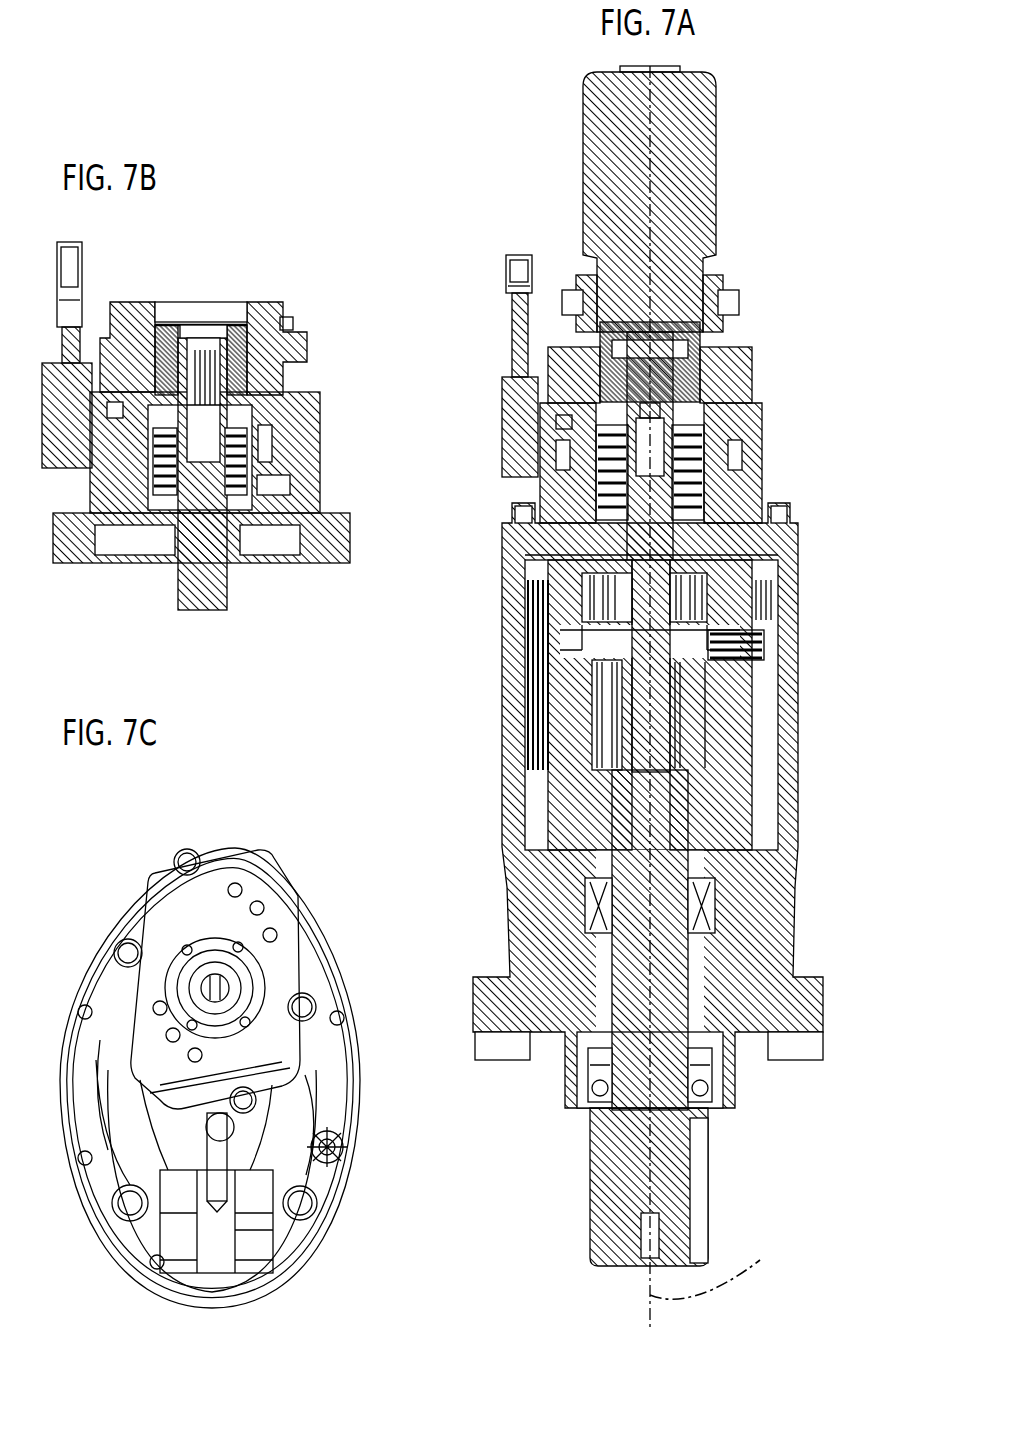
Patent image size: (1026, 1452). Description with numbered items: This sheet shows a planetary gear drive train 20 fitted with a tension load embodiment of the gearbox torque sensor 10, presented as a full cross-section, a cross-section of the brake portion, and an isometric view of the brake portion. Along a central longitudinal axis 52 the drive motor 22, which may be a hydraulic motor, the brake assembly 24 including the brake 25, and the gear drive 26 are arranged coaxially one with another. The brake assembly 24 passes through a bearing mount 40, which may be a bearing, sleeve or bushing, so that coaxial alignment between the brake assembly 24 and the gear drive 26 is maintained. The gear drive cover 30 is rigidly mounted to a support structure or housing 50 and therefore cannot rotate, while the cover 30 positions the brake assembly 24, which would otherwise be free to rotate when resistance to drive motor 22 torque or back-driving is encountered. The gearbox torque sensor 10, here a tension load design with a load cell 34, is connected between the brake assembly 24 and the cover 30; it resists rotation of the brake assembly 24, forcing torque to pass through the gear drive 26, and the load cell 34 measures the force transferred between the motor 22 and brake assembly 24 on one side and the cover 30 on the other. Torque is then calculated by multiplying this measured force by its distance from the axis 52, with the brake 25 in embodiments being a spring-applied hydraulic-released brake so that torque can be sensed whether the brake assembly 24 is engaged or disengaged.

In FIG. 7A, the gearbox torque sensor 10 is at (465, 533).
In FIG. 7A, the drive train 20 is at (498, 216).
In FIG. 7A, the drive motor 22 is at (708, 192).
In FIG. 7B, the brake assembly 24 is at (157, 521).
In FIG. 7A, the brake 25 is at (700, 376).
In FIG. 7A, the gear drive 26 is at (668, 746).
In FIG. 7A, the gear drive cover 30 is at (746, 480).
In FIG. 7A, the load cell 34 is at (513, 356).
In FIG. 7A, the bearing mount 40 is at (720, 438).
In FIG. 7A, the support structure or housing 50 is at (510, 731).
In FIG. 7A, the central longitudinal axis 52 is at (726, 698).